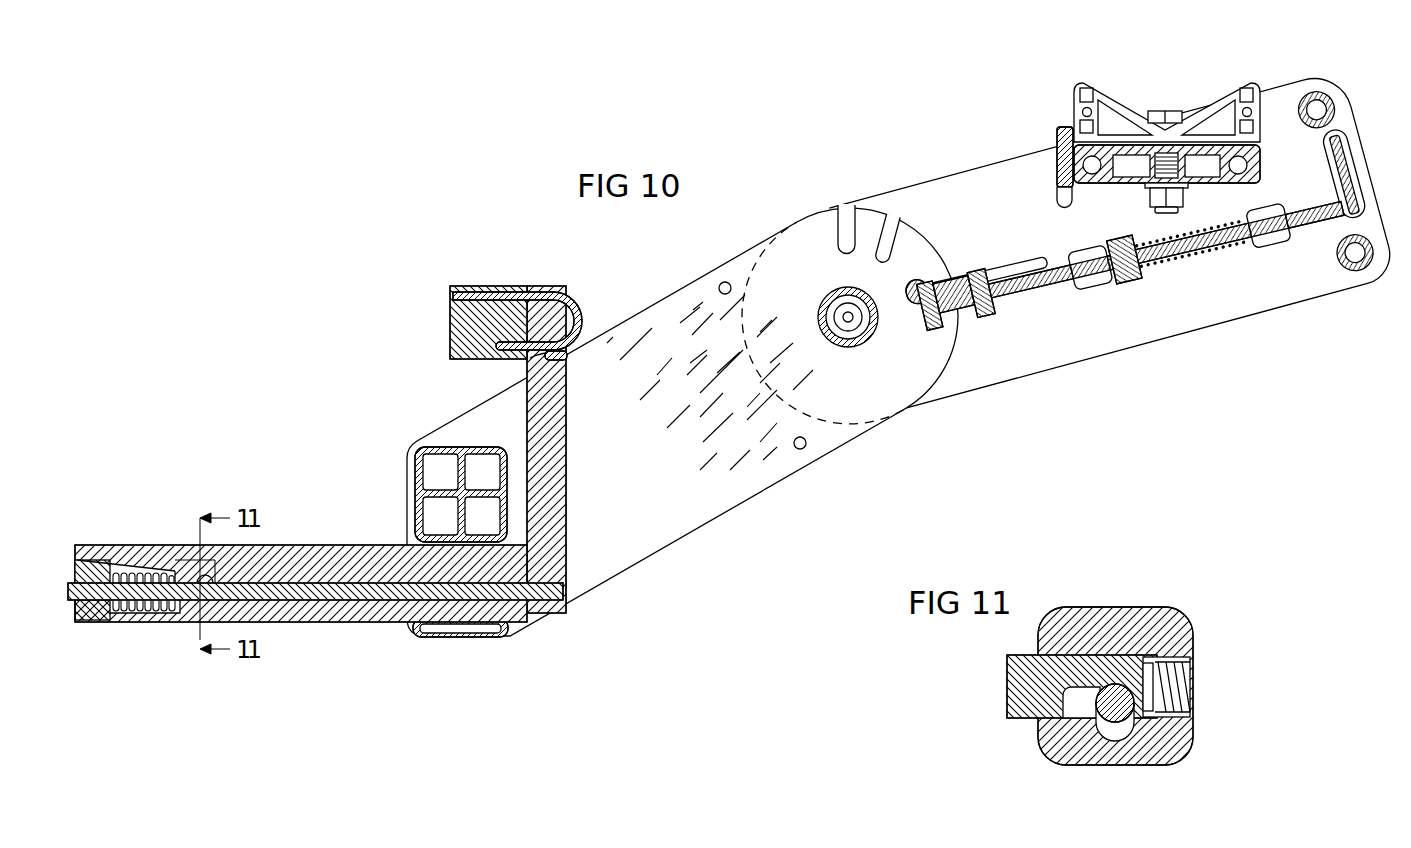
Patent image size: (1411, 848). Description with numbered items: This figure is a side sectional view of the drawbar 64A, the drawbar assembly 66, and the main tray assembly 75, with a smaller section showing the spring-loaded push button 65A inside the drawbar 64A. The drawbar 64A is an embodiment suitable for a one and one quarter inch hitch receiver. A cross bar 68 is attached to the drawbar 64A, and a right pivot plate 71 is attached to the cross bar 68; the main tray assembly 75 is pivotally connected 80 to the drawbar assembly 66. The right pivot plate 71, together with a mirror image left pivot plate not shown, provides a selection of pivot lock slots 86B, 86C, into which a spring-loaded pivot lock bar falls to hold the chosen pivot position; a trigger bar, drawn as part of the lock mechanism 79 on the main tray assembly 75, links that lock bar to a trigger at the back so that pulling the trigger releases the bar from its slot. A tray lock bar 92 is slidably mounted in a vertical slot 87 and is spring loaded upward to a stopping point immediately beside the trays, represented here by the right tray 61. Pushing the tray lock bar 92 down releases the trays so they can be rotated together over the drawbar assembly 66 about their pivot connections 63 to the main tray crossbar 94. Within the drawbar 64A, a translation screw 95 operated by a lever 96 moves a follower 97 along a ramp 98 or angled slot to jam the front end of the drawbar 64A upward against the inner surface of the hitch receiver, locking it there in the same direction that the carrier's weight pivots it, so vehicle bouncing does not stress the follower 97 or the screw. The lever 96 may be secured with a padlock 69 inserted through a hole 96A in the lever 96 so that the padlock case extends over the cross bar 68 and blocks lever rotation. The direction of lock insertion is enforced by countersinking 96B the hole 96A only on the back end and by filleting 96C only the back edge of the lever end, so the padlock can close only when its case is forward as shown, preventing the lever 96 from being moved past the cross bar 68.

In FIG. 10, the right tray 61 is at (1112, 101).
In FIG. 10, the pivot connection 63 is at (1159, 111).
In FIG. 10, the drawbar 64A is at (330, 553).
In FIG. 11, the drawbar 64A is at (1112, 607).
In FIG. 10, the spring-loaded push button 65A is at (183, 570).
In FIG. 11, the spring-loaded push button 65A is at (1016, 683).
In FIG. 10, the drawbar assembly 66 is at (682, 390).
In FIG. 10, the cross bar 68 is at (453, 447).
In FIG. 10, the padlock 69 is at (469, 339).
In FIG. 10, the right pivot plate 71 is at (637, 452).
In FIG. 10, the main tray assembly 75 is at (1108, 259).
In FIG. 10, the rod assembly 79 is at (1111, 276).
In FIG. 10, the pivot connection 80 is at (845, 318).
In FIG. 10, the pivot lock slot 86B is at (880, 214).
In FIG. 10, the pivot lock slot 86C is at (826, 222).
In FIG. 10, the vertical slot 87 is at (1060, 199).
In FIG. 10, the tray lock bar 92 is at (1058, 154).
In FIG. 10, the main tray crossbar 94 is at (1102, 184).
In FIG. 10, the translation screw 95 is at (330, 593).
In FIG. 11, the translation screw 95 is at (1113, 717).
In FIG. 10, the lever 96 is at (579, 449).
In FIG. 10, the hole 96A is at (547, 363).
In FIG. 10, the countersinking 96B is at (563, 355).
In FIG. 10, the filleting 96C is at (576, 300).
In FIG. 10, the end block 97 is at (91, 622).
In FIG. 10, the ramp 98 is at (122, 557).